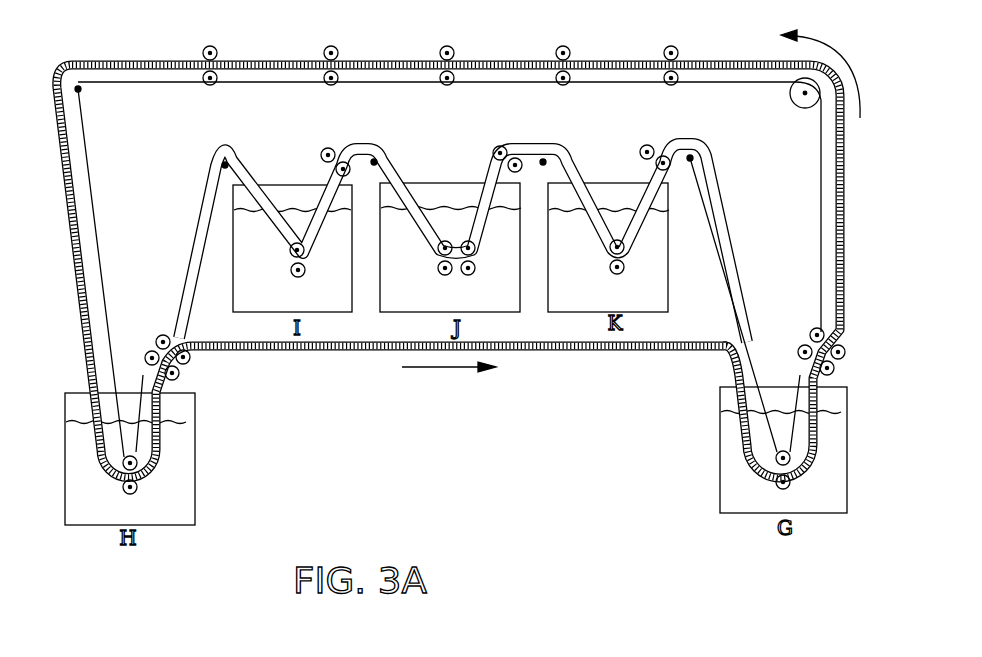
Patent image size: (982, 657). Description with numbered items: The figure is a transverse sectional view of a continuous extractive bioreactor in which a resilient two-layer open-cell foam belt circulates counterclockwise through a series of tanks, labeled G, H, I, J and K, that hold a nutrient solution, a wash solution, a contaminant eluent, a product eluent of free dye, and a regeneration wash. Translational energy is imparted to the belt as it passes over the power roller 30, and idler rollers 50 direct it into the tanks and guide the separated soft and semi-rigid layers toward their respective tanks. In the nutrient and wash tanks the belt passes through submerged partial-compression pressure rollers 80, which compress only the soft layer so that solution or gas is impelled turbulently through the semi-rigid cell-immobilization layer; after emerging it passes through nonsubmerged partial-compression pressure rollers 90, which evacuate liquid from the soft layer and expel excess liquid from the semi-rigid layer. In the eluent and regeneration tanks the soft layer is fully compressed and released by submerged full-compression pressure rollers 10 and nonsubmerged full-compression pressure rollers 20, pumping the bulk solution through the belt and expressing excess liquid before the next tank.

The set of fully-submerged, full-compression pressure rollers 10 is at (296, 278).
The set of nonsubmerged, full-compression pressure rollers 20 is at (323, 149).
The power roller 30 is at (791, 88).
The idler roller 50 is at (82, 93).
The set of submerged, partial-compression pressure rollers 80 is at (216, 48).
The set of nonsubmerged, partial-compression pressure rollers 90 is at (157, 338).